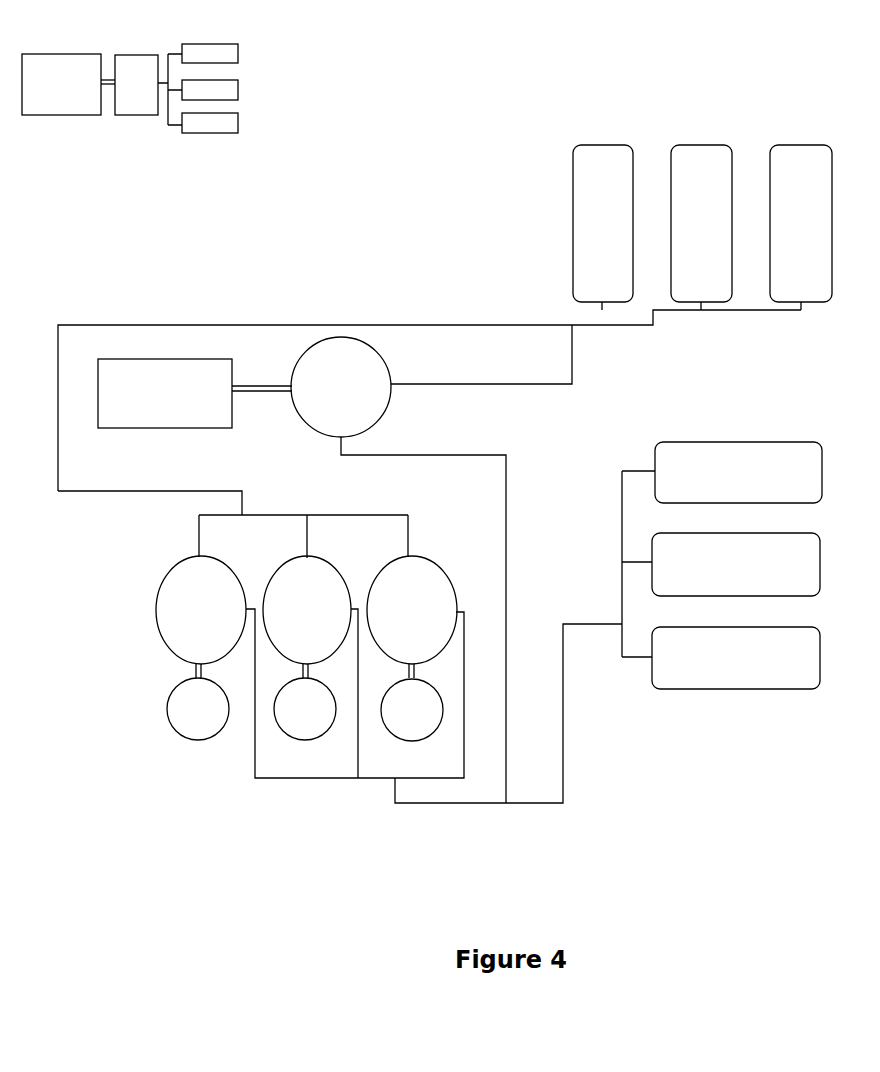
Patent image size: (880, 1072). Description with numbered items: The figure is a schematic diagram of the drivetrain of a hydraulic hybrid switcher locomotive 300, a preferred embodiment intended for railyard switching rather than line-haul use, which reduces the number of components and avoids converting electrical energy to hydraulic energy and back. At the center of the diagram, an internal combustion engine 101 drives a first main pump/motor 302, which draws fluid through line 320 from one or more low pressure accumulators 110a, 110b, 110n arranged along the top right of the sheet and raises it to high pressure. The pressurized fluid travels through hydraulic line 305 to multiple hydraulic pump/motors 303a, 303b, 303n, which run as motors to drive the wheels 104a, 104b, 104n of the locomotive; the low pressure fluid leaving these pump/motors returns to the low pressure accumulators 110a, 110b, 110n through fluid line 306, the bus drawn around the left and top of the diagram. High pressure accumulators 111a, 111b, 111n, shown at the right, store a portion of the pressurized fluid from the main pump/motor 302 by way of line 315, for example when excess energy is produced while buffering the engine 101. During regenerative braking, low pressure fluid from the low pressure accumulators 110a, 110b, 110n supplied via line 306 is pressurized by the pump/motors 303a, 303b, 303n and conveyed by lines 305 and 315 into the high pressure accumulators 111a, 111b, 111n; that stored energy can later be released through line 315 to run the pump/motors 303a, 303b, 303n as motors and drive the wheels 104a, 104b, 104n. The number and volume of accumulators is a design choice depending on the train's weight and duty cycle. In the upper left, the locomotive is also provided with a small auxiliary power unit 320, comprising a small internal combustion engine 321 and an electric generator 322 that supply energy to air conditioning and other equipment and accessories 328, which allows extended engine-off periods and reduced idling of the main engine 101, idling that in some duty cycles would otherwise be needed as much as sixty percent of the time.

The hydraulic hybrid switcher locomotive 300 is at (450, 232).
The auxiliary power unit 320 is at (297, 198).
The small internal combustion engine 321 is at (61, 84).
The electric generator 322 is at (136, 85).
The equipment and accessories 328 is at (230, 123).
The fluid line 306 is at (258, 325).
The internal combustion engine 101 is at (195, 393).
The first main pump/motor 302 is at (341, 387).
The hydraulic line 305 is at (507, 558).
The line 315 is at (565, 707).
The hydraulic pump/motor 303a is at (201, 610).
The hydraulic pump/motor 303b is at (307, 610).
The hydraulic pump/motor 303n is at (412, 610).
The wheel 104a is at (198, 709).
The wheel 104b is at (305, 709).
The wheel 104n is at (412, 710).
The low pressure accumulator 110a is at (603, 223).
The low pressure accumulator 110b is at (701, 223).
The low pressure accumulator 110n is at (801, 223).
The high pressure accumulator 111a is at (738, 472).
The high pressure accumulator 111b is at (736, 564).
The high pressure accumulator 111n is at (736, 658).